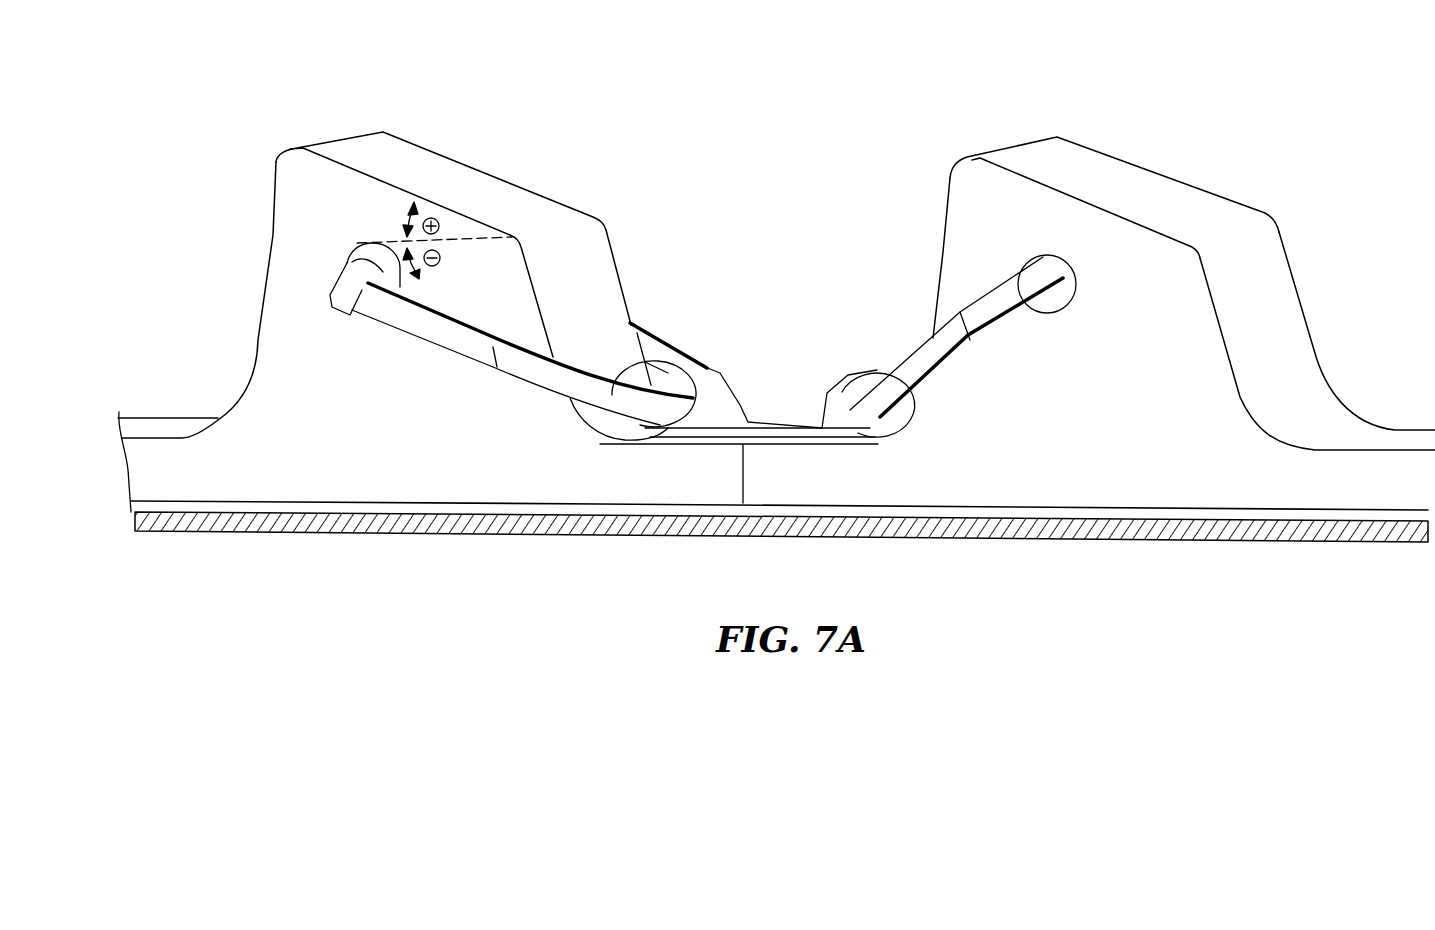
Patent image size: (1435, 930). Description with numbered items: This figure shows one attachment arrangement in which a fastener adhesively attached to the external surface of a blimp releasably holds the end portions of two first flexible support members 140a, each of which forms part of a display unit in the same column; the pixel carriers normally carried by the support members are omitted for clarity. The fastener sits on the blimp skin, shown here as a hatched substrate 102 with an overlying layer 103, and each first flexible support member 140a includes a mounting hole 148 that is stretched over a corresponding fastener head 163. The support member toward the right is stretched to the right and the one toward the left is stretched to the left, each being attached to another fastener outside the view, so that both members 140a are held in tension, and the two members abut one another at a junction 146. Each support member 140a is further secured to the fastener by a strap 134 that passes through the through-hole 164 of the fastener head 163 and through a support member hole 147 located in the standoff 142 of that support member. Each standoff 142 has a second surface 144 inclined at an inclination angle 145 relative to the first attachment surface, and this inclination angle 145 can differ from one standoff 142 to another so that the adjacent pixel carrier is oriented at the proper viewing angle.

The substrate 102 is at (132, 520).
The layer 103 is at (202, 512).
The first flexible support member 140a is at (445, 465).
The standoff 142 is at (270, 330).
The second surface 144 is at (487, 197).
The inclination angle 145 is at (408, 212).
The support member hole 147 is at (365, 248).
The strap 134 is at (614, 400).
The through-hole 164 is at (690, 398).
The fastener head 163 is at (720, 403).
The junction 146 is at (745, 473).
The mounting hole 148 is at (677, 432).